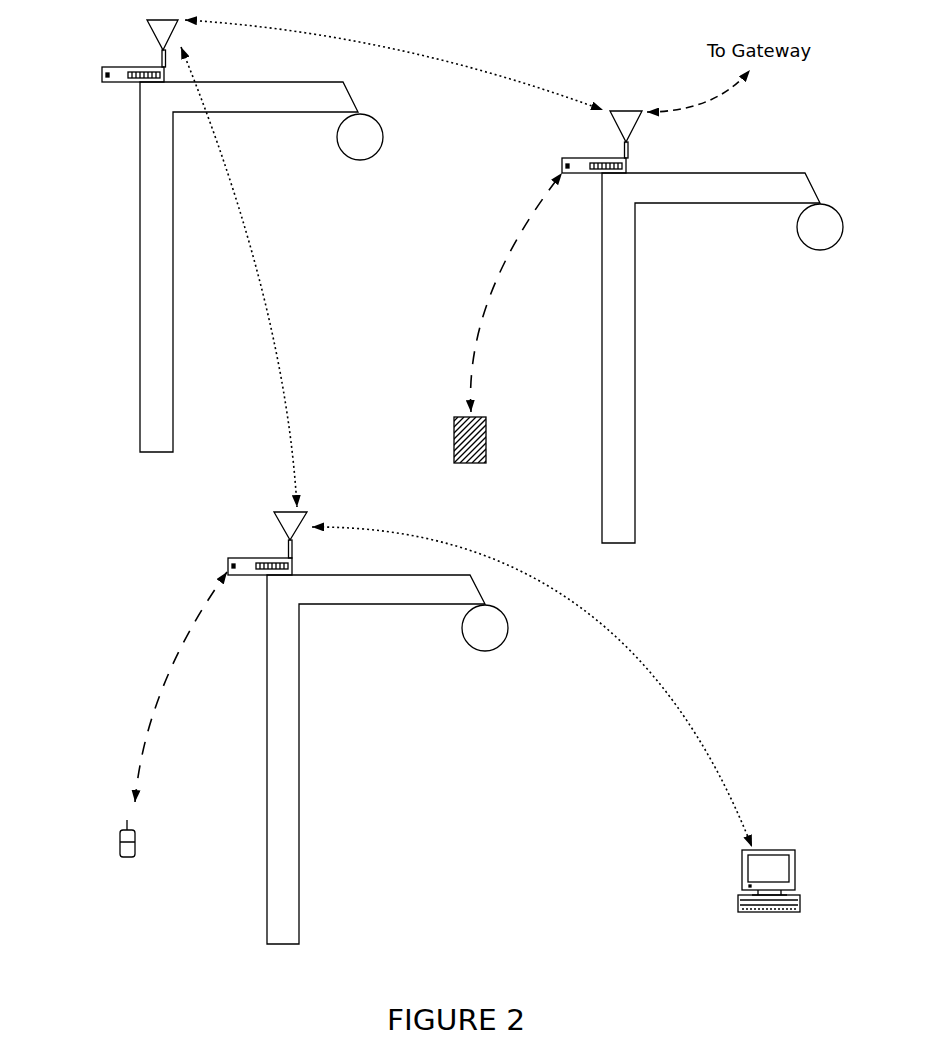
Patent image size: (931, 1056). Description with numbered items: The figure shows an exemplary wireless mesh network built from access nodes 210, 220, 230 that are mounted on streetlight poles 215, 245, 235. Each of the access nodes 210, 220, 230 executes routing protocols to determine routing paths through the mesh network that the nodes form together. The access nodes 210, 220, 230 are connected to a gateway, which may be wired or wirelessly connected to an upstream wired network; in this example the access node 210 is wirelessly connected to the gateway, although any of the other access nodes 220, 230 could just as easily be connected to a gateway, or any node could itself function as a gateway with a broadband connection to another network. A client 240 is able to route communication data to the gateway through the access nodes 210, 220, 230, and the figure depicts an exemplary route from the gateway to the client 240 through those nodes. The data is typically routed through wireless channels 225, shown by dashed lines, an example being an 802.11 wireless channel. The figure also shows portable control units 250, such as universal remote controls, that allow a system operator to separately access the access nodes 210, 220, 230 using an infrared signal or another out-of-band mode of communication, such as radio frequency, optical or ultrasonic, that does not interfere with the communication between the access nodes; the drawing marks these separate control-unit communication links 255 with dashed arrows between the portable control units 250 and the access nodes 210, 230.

The access node 210 is at (643, 135).
The streetlight pole 215 is at (628, 421).
The access node 220 is at (117, 85).
The wireless channels 225 is at (418, 60).
The access node 230 is at (227, 565).
The streetlight pole 235 is at (286, 844).
The client 240 is at (770, 848).
The streetlight pole 245 is at (158, 391).
The portable control units 250 is at (473, 468).
The wireless client links 255 is at (156, 673).